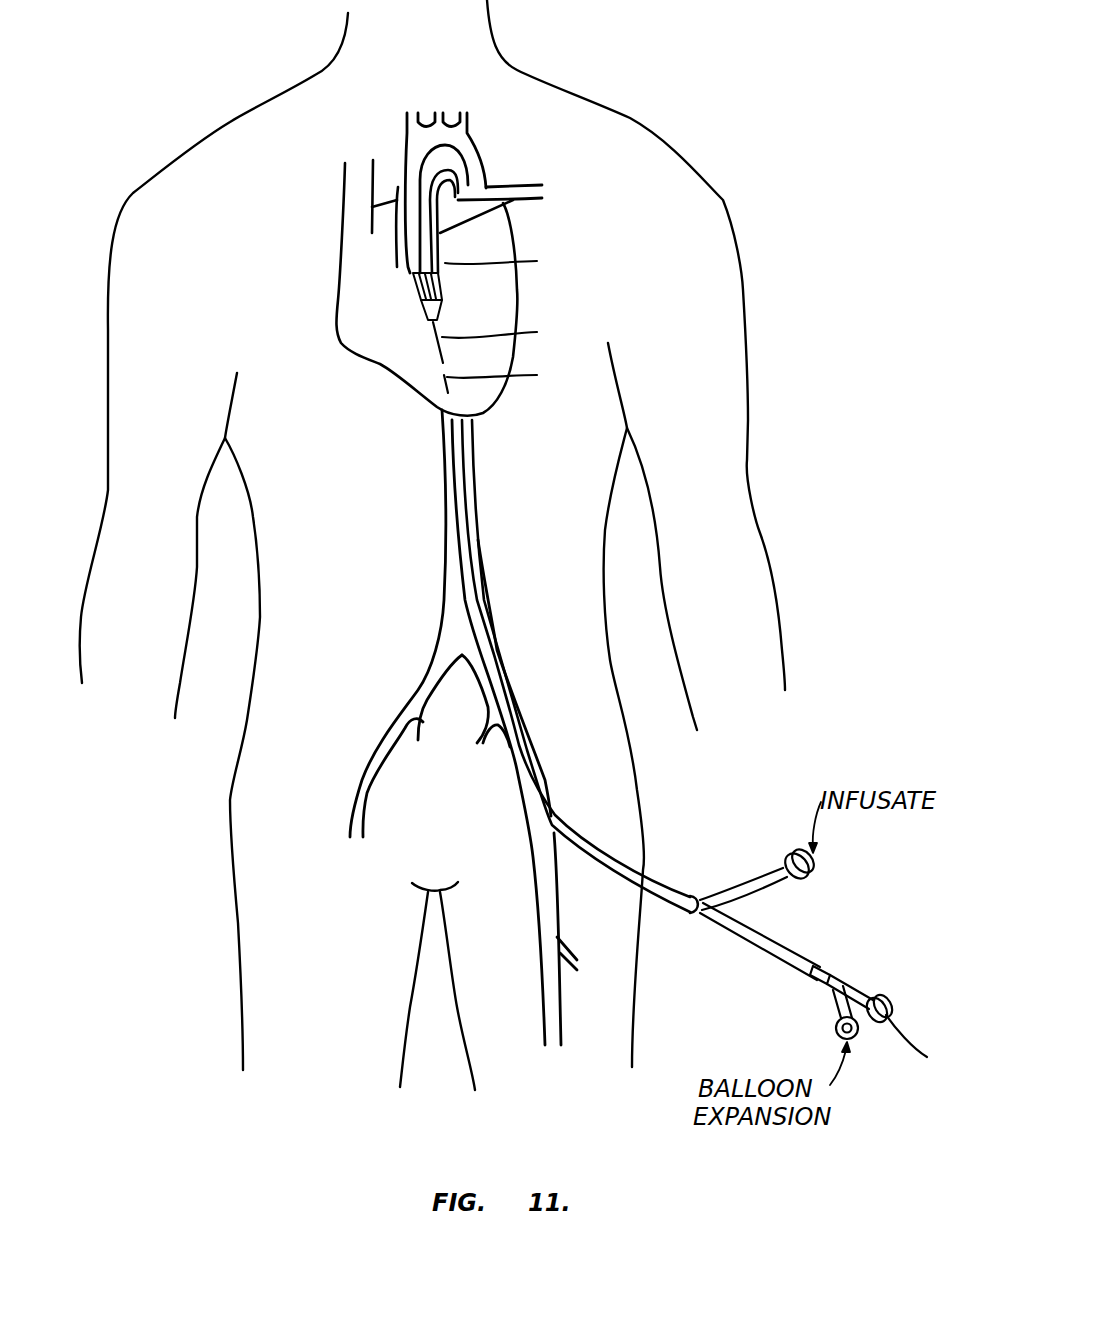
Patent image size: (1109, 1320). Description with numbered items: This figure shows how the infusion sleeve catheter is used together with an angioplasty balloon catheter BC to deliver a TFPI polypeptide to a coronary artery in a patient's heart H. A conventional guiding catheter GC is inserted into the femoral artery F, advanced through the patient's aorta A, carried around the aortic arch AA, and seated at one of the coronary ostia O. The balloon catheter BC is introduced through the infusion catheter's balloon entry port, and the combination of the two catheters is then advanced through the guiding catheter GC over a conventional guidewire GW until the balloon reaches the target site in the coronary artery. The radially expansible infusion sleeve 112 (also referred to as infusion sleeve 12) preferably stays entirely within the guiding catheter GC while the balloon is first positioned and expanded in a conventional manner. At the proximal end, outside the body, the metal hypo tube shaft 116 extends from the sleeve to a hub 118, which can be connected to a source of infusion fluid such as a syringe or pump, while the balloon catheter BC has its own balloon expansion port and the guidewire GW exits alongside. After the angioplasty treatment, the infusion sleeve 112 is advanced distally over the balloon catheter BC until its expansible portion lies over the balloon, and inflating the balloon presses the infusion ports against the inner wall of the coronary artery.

The aortic arch AA is at (470, 140).
The coronary ostia O is at (502, 268).
The balloon catheter BC is at (725, 973).
The guidewire GW is at (908, 1035).
The heart H is at (342, 297).
The infusion sleeve 112 is at (417, 303).
The guiding catheter GC is at (456, 459).
The aorta A is at (478, 493).
The infusion sleeve 12 is at (395, 542).
The femoral artery F is at (532, 733).
The shaft 116 is at (743, 897).
The hub 118 is at (815, 867).